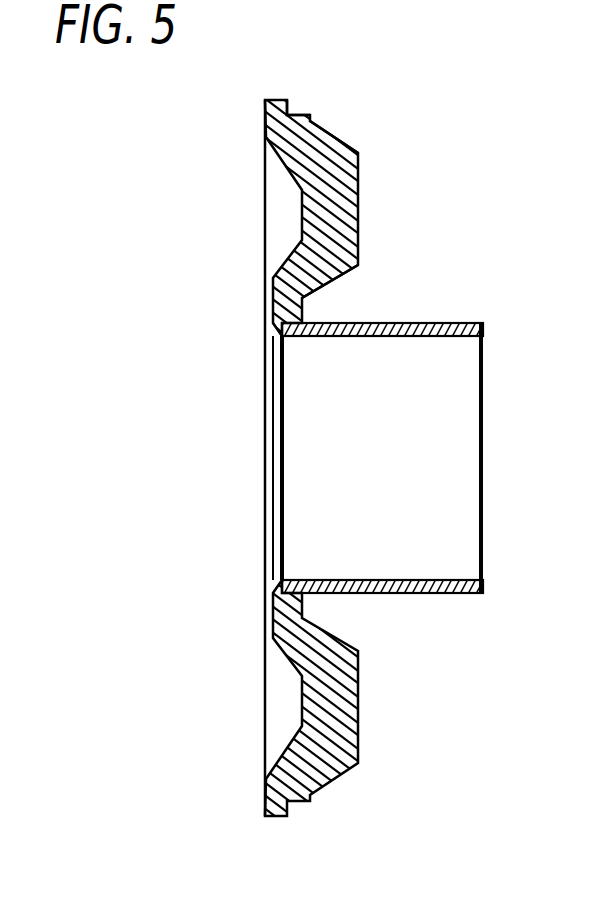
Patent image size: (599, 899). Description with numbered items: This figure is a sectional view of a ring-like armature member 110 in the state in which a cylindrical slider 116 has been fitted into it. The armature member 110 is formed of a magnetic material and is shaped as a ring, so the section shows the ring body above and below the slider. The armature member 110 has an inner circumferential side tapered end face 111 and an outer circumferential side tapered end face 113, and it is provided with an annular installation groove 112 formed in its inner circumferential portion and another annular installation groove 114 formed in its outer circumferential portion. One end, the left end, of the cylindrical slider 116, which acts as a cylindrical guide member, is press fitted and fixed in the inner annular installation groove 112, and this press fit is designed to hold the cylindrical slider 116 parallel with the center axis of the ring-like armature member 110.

The armature member 110 is at (358, 205).
The inner circumferential side tapered end face 111 is at (335, 280).
The annular installation groove 112 is at (286, 341).
The outer circumferential side tapered end face 113 is at (333, 138).
The annular installation groove 114 is at (299, 115).
The cylindrical slider 116 is at (433, 595).